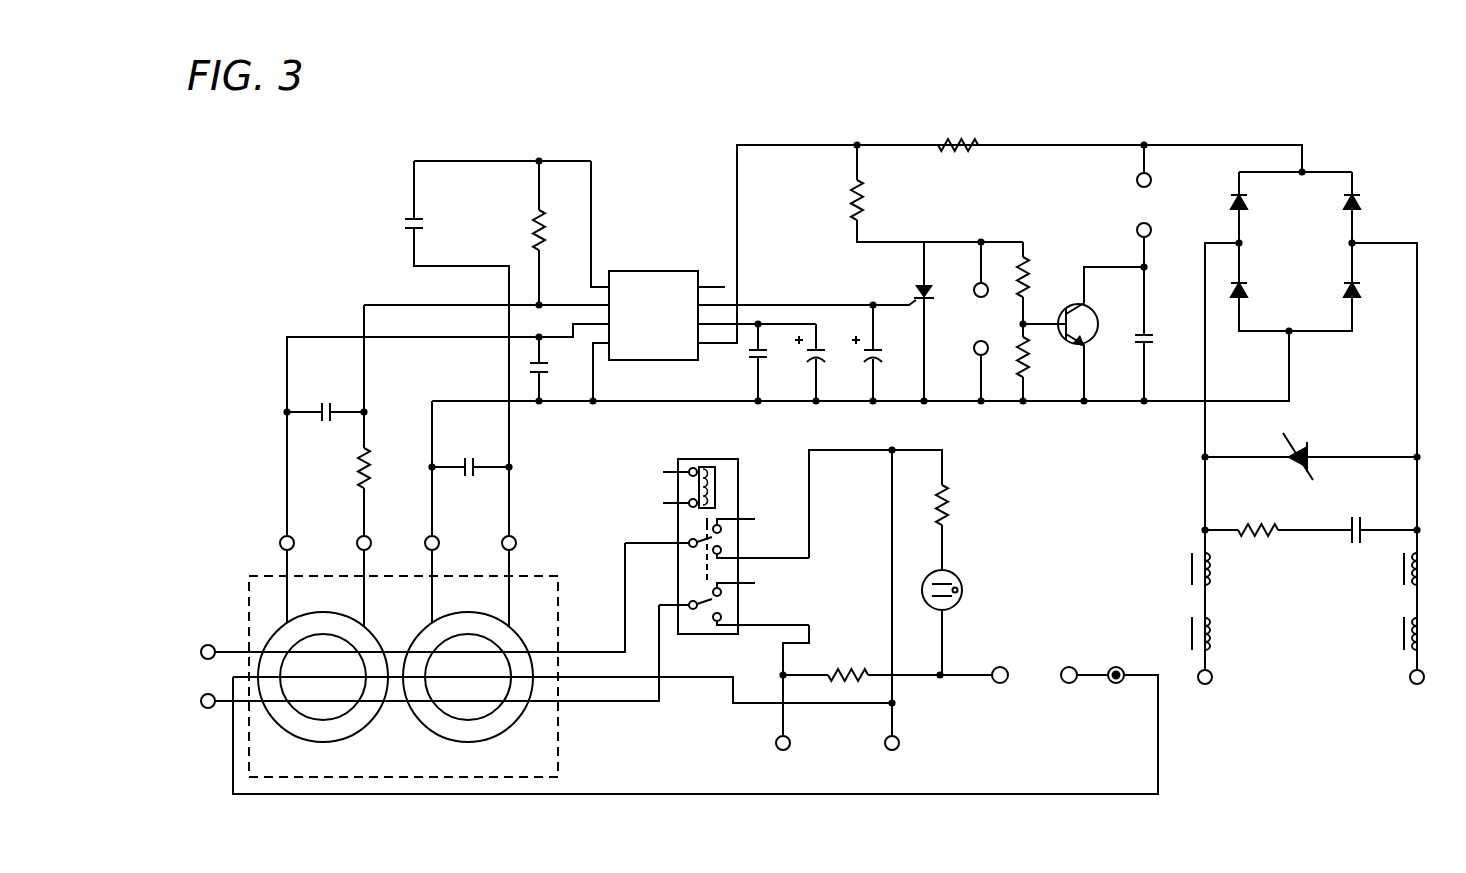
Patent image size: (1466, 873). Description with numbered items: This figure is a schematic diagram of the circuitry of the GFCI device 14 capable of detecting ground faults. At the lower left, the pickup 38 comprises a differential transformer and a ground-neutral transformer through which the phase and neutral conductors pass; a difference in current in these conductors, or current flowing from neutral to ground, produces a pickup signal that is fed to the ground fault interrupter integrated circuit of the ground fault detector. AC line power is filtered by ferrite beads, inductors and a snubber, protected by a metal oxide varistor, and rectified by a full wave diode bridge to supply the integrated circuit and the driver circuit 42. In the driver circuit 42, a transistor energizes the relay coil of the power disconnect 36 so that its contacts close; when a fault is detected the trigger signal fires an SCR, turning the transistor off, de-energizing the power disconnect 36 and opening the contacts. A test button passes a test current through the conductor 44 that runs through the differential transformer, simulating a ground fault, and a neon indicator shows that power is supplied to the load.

The GFCI device 14 is at (620, 86).
The power disconnect 36 is at (752, 466).
The pickup 38 is at (238, 585).
The driver circuit 42 is at (1056, 228).
The conductor 44 is at (695, 682).